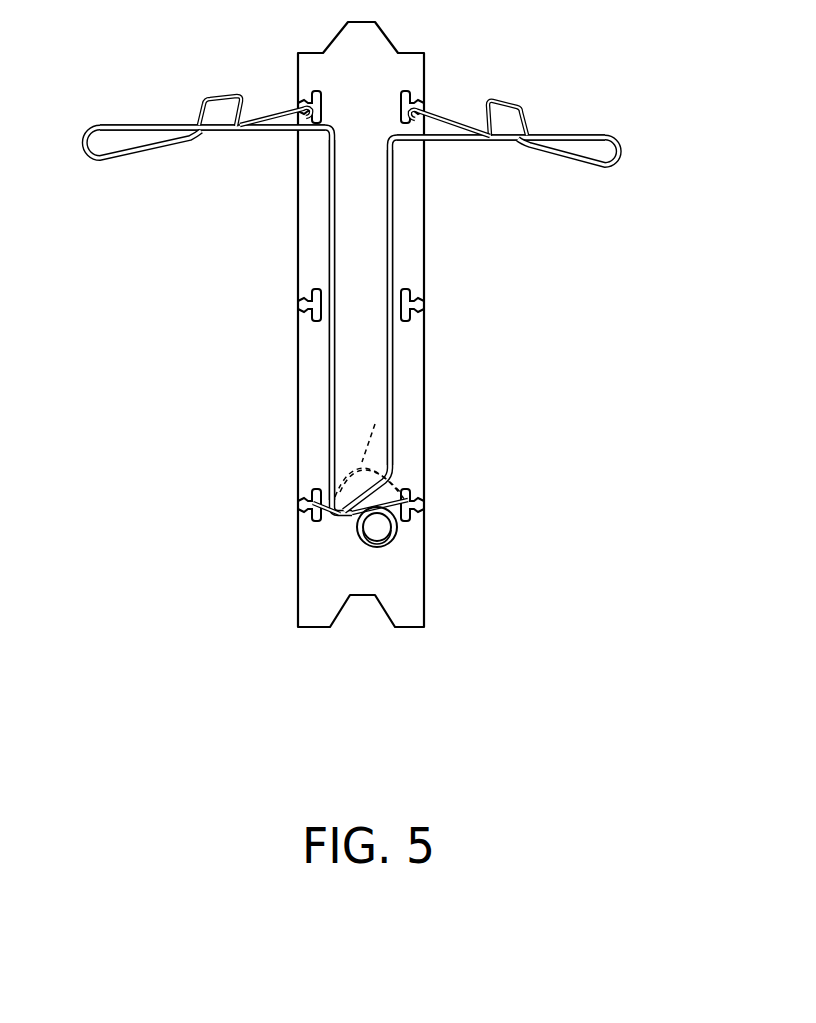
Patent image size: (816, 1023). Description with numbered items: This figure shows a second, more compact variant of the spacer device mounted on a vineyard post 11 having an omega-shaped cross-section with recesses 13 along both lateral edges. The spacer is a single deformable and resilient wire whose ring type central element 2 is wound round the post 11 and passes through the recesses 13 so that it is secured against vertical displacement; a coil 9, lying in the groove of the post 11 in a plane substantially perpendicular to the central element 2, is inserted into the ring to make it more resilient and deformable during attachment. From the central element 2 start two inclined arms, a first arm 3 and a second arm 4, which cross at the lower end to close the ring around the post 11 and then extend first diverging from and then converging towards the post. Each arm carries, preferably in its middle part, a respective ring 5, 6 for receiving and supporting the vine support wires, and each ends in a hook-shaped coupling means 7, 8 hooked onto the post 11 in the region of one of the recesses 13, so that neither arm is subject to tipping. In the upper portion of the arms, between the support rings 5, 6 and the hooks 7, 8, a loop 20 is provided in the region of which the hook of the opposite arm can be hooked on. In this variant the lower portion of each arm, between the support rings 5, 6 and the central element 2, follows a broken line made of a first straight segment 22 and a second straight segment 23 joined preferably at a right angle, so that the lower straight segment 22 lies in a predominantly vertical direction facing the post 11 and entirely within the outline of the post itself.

The ring type central element 2 is at (370, 451).
The first arm 3 is at (327, 214).
The second arm 4 is at (395, 342).
The ring 5 is at (97, 128).
The ring 6 is at (606, 135).
The hook-shaped coupling means 7 is at (300, 110).
The hook-shaped coupling means 8 is at (420, 110).
The coil 9 is at (392, 540).
The vineyard post 11 is at (424, 205).
The recesses 13 is at (414, 104).
The loop 20 is at (226, 98).
The first straight segment 22 is at (396, 407).
The second straight segment 23 is at (282, 130).